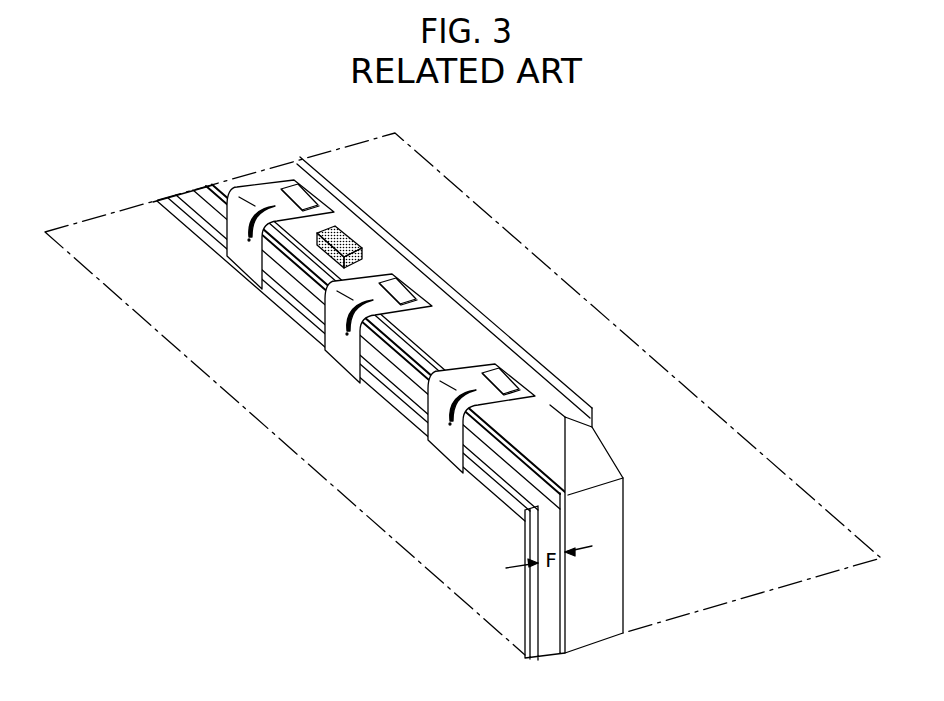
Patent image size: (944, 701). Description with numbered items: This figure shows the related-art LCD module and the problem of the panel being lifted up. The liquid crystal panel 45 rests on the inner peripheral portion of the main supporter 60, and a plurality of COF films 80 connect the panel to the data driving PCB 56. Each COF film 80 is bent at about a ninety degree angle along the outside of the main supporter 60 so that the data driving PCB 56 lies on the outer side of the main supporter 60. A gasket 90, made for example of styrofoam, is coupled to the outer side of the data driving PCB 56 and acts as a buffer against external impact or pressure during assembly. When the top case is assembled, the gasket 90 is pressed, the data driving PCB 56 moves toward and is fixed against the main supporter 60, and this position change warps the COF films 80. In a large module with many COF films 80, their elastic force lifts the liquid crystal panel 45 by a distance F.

The liquid crystal panel 45 is at (352, 462).
The data driving PCB 56 is at (484, 338).
The main supporter 60 is at (566, 461).
The COF film 80 is at (248, 200).
The gasket 90 is at (350, 243).